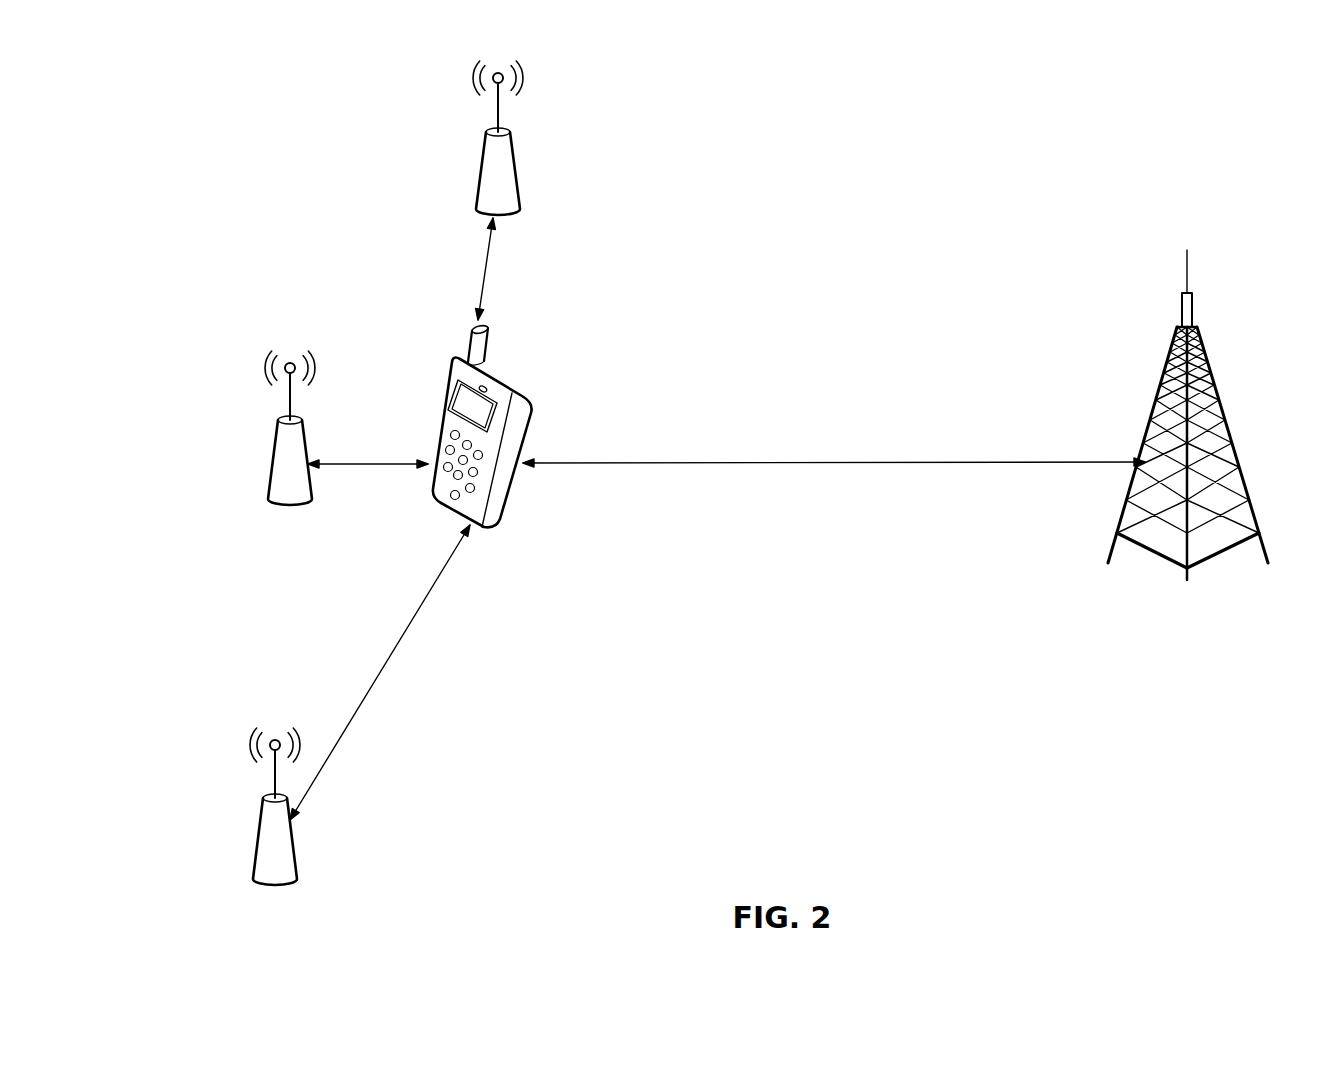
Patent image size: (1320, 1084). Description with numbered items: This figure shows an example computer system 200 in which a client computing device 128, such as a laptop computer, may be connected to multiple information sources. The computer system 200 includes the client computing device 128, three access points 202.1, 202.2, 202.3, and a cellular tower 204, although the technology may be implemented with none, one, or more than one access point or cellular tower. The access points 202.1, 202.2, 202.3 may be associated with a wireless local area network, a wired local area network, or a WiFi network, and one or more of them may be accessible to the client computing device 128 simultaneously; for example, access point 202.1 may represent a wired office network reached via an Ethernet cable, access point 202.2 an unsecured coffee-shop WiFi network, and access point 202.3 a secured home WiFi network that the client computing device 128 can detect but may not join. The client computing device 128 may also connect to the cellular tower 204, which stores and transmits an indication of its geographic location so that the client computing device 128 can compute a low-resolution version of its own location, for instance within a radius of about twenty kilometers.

The computer system 200 is at (797, 87).
The access point 202.1 is at (467, 138).
The access point 202.2 is at (259, 428).
The access point 202.3 is at (244, 806).
The client computing device 128 is at (529, 456).
The cellular tower 204 is at (1188, 472).